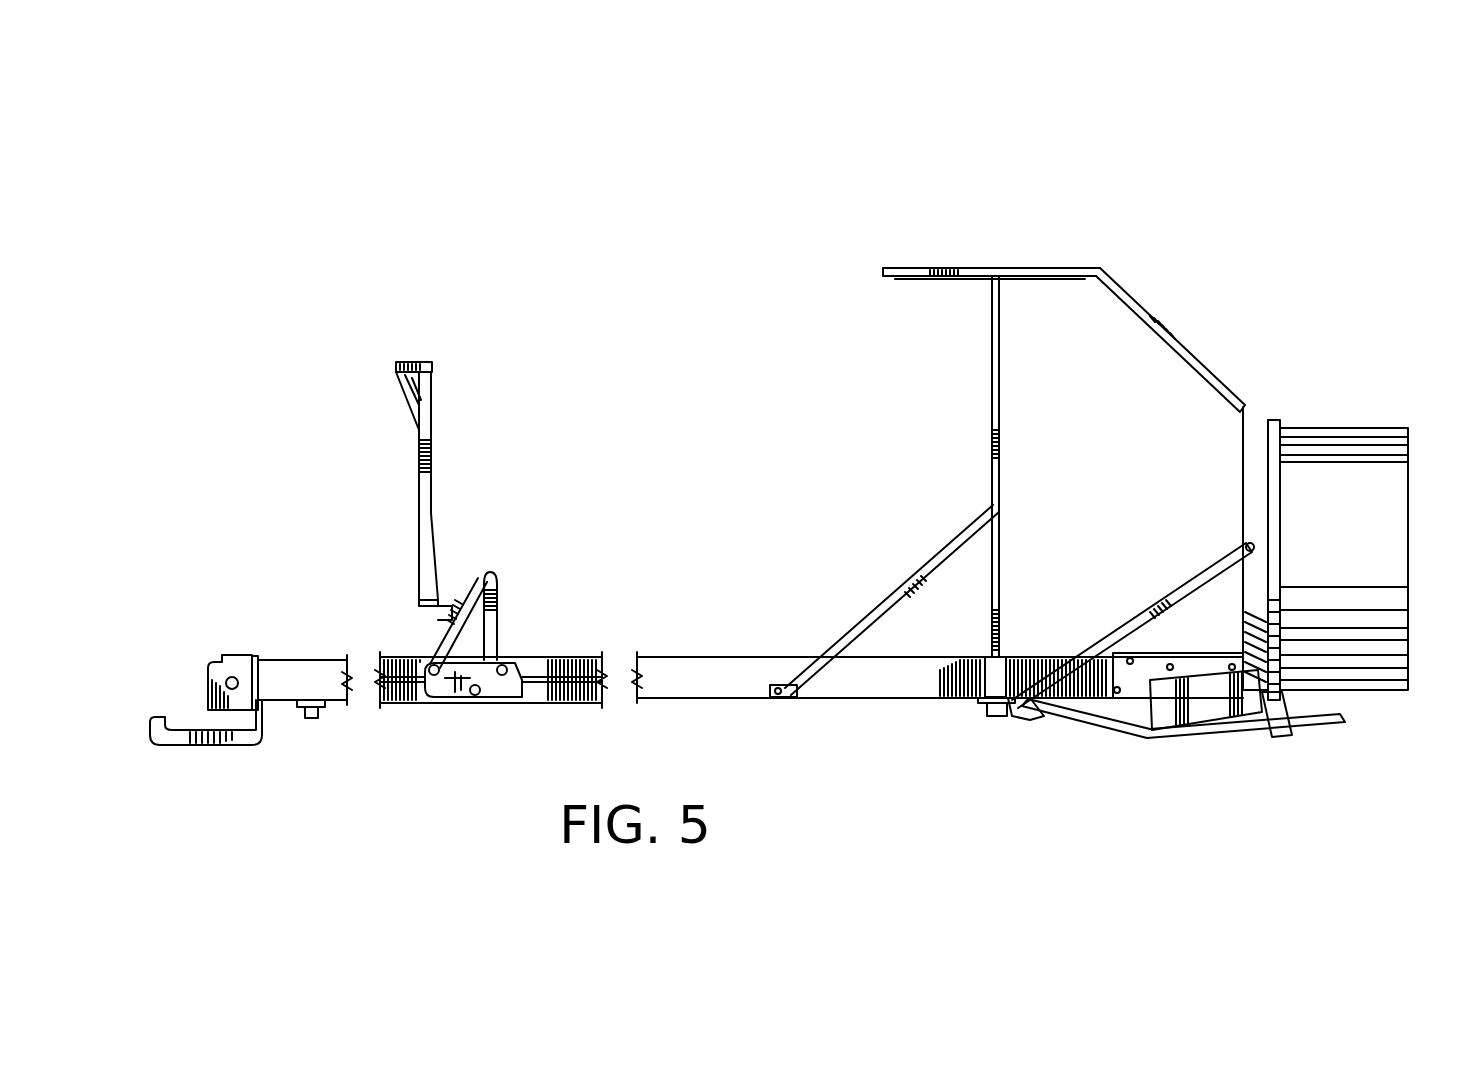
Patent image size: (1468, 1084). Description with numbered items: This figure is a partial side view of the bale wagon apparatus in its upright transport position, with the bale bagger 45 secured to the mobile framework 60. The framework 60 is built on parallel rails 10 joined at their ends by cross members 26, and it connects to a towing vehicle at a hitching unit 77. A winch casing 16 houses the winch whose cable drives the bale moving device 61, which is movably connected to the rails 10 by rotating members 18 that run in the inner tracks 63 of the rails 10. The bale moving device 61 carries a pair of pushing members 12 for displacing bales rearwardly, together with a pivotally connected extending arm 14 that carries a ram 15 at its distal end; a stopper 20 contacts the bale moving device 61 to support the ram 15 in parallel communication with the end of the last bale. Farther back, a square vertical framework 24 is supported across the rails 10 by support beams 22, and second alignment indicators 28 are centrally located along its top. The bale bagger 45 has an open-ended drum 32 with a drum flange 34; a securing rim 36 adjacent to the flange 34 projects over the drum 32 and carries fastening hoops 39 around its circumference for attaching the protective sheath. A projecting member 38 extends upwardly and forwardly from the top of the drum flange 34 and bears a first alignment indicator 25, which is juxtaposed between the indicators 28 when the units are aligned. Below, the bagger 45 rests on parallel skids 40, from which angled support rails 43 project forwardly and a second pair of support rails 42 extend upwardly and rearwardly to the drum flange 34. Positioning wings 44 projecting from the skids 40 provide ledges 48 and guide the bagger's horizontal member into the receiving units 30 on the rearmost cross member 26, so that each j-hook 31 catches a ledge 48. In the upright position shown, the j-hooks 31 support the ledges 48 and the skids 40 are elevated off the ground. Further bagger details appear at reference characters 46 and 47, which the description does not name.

The parallel rails 10 is at (700, 700).
The pushing members 12 is at (498, 600).
The extending arm 14 is at (432, 462).
The ram 15 is at (410, 362).
The winch casing 16 is at (236, 657).
The rotating members 18 is at (437, 700).
The stopper 20 is at (455, 592).
The support beams 22 is at (885, 598).
The square vertical framework 24 is at (990, 430).
The first alignment indicator 25 is at (882, 270).
The cross members 26 is at (312, 720).
The second alignment indicators 28 is at (990, 290).
The receiving units 30 is at (1012, 725).
The j-hook 31 is at (1255, 722).
The open-ended drum 32 is at (1405, 428).
The drum flange 34 is at (1250, 410).
The securing rim 36 is at (1275, 425).
The projecting member 38 is at (1152, 312).
The fastening hoops 39 is at (1322, 432).
The parallel skids 40 is at (1272, 725).
The second pair of support rails 42 is at (1190, 582).
The angled support rails 43 is at (1078, 728).
The positioning wings 44 is at (1155, 742).
The bale bagger 45 is at (1413, 480).
The bar end 46 is at (1345, 720).
The bar 47 is at (1298, 732).
The ledge 48 is at (1195, 733).
The mobile framework 60 is at (737, 713).
The bale moving device 61 is at (512, 637).
The inner tracks 63 is at (575, 703).
The hitching unit 77 is at (232, 745).